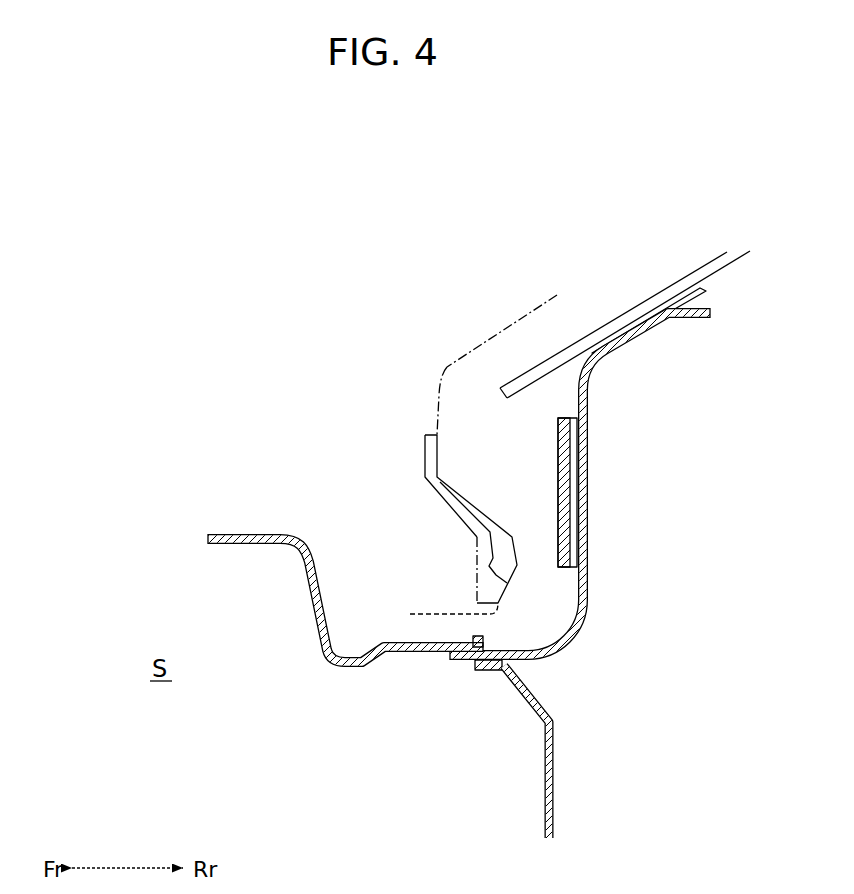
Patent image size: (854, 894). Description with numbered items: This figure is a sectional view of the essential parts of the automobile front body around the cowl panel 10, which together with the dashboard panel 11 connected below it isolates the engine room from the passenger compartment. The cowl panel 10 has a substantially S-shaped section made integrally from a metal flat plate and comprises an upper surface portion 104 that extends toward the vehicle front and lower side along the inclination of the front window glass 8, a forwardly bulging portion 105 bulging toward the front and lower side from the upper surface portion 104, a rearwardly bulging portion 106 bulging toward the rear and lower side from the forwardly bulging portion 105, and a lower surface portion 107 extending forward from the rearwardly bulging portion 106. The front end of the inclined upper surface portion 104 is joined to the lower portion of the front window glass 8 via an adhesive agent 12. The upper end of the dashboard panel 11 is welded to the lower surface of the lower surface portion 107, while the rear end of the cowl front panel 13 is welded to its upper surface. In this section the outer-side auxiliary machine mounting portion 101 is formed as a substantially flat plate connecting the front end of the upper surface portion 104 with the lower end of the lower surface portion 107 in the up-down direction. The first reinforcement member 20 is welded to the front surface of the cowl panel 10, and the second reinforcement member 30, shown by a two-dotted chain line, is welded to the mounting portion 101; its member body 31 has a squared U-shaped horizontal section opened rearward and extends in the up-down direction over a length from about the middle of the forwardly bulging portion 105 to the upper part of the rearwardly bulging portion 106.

The front window glass 8 is at (700, 268).
The cowl panel 10 is at (589, 484).
The dashboard panel 11 is at (556, 782).
The adhesive agent 12 is at (625, 317).
The cowl front panel 13 is at (228, 532).
The first reinforcement member 20 is at (441, 535).
The second reinforcement member 30 is at (537, 492).
The member body 31 is at (558, 490).
The outer-side auxiliary machine mounting portion 101 is at (588, 583).
The upper surface portion 104 is at (513, 323).
The forwardly bulging portion 105 is at (440, 397).
The rearwardly bulging portion 106 is at (528, 570).
The lower surface portion 107 is at (424, 612).